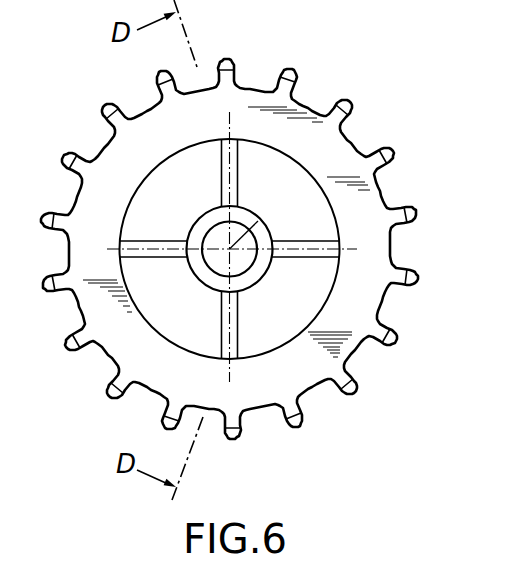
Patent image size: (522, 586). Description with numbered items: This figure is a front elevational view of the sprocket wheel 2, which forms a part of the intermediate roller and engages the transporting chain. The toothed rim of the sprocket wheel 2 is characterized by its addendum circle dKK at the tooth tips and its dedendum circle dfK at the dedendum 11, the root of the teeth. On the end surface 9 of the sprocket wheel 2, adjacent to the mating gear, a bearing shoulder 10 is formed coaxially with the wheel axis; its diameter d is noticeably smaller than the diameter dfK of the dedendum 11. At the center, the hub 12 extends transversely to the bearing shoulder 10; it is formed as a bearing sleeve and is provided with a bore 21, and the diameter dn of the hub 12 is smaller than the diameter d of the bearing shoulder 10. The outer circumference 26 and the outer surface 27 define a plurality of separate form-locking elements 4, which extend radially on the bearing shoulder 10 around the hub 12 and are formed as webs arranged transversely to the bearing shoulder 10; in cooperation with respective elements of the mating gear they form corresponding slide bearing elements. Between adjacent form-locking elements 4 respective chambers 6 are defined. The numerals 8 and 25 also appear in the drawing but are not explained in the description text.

The sprocket wheel 2 is at (414, 102).
The form-locking elements 4 is at (222, 140).
The chambers 6 is at (133, 200).
The radius of hub bore 8 is at (258, 221).
The end surface 9 is at (373, 191).
The bearing shoulder 10 is at (322, 307).
The dedendum 11 is at (68, 242).
The hub 12 is at (208, 210).
The bore 21 is at (245, 266).
The hub ring 25 is at (268, 237).
The outer circumference 26 is at (165, 163).
The outer surface 27 is at (338, 270).
The diameter of the bearing shoulder d is at (147, 182).
The diameter of the hub dn is at (193, 264).
The addendum circle diameter dKK is at (291, 66).
The dedendum circle diameter dfK is at (306, 107).